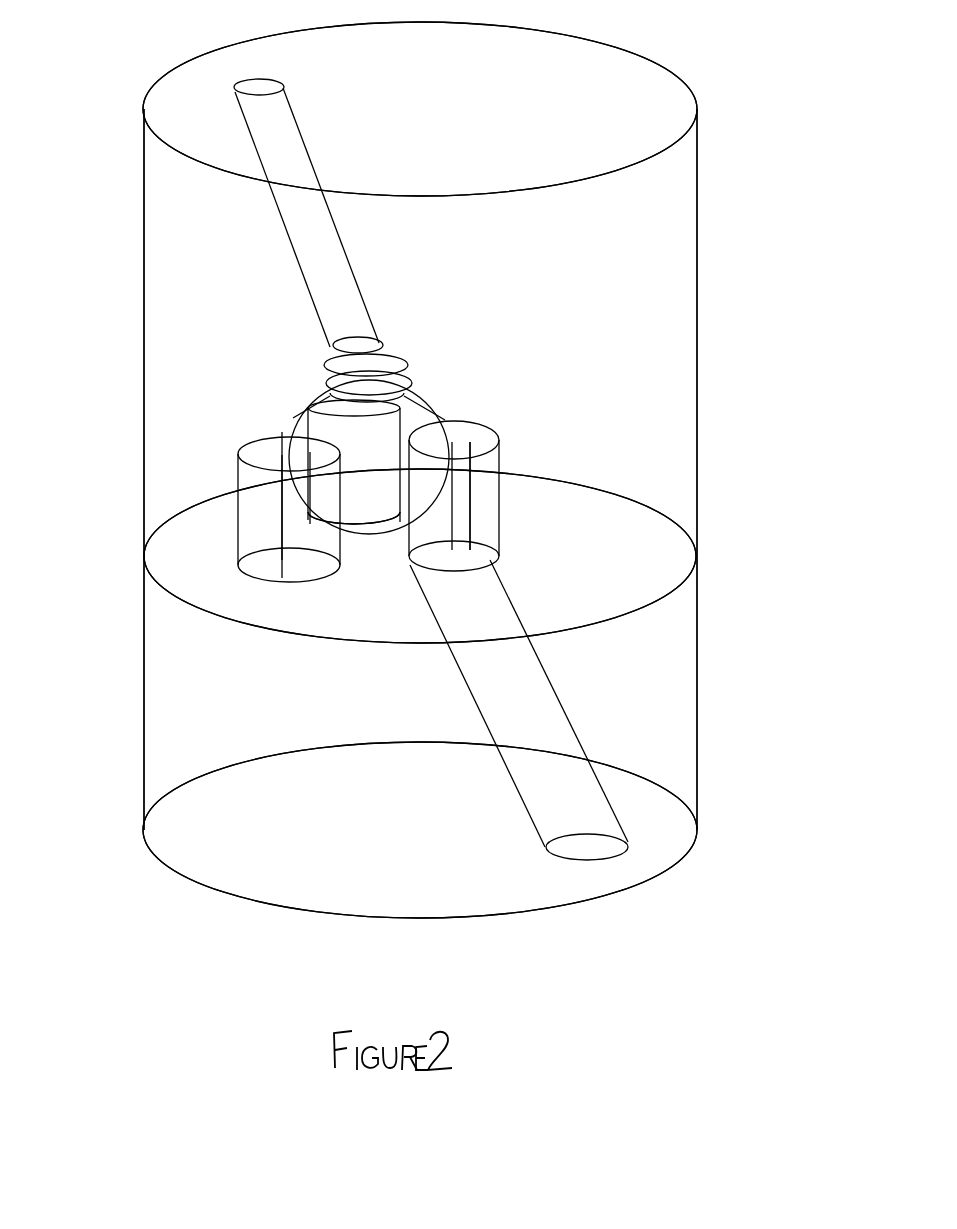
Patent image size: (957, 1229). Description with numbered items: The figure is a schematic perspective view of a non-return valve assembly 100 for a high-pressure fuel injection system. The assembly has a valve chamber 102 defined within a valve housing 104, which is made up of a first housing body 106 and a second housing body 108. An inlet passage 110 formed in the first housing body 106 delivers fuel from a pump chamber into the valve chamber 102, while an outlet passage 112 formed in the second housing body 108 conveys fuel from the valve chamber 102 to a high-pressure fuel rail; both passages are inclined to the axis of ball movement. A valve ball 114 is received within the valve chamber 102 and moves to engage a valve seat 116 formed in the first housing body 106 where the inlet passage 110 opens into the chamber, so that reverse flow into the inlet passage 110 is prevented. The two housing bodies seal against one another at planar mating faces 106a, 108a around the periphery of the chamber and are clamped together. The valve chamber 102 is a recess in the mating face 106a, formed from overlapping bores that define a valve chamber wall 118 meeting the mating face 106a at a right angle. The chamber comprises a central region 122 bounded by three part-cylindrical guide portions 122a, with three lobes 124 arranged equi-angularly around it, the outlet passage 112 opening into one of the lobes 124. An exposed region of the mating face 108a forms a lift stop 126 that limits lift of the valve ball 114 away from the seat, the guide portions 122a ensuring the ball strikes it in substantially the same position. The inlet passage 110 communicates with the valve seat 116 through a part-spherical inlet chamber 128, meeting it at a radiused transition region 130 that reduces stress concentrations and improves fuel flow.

The non-return valve assembly 100 is at (95, 73).
The valve chamber 102 is at (268, 505).
The valve housing 104 is at (700, 81).
The first housing body 106 is at (677, 400).
The mating face of first housing body 106a is at (675, 565).
The second housing body 108 is at (687, 703).
The mating face of second housing body 108a is at (668, 582).
The inlet passage 110 is at (293, 215).
The outlet passage 112 is at (577, 788).
The valve ball 114 is at (330, 432).
The valve seat 116 is at (438, 408).
The valve chamber wall 118 is at (507, 504).
The central region 122 is at (360, 555).
The guide portions 122a is at (290, 518).
The lobes 124 is at (242, 547).
The lift stop 126 is at (363, 538).
The inlet chamber 128 is at (330, 365).
The transition region 130 is at (333, 352).